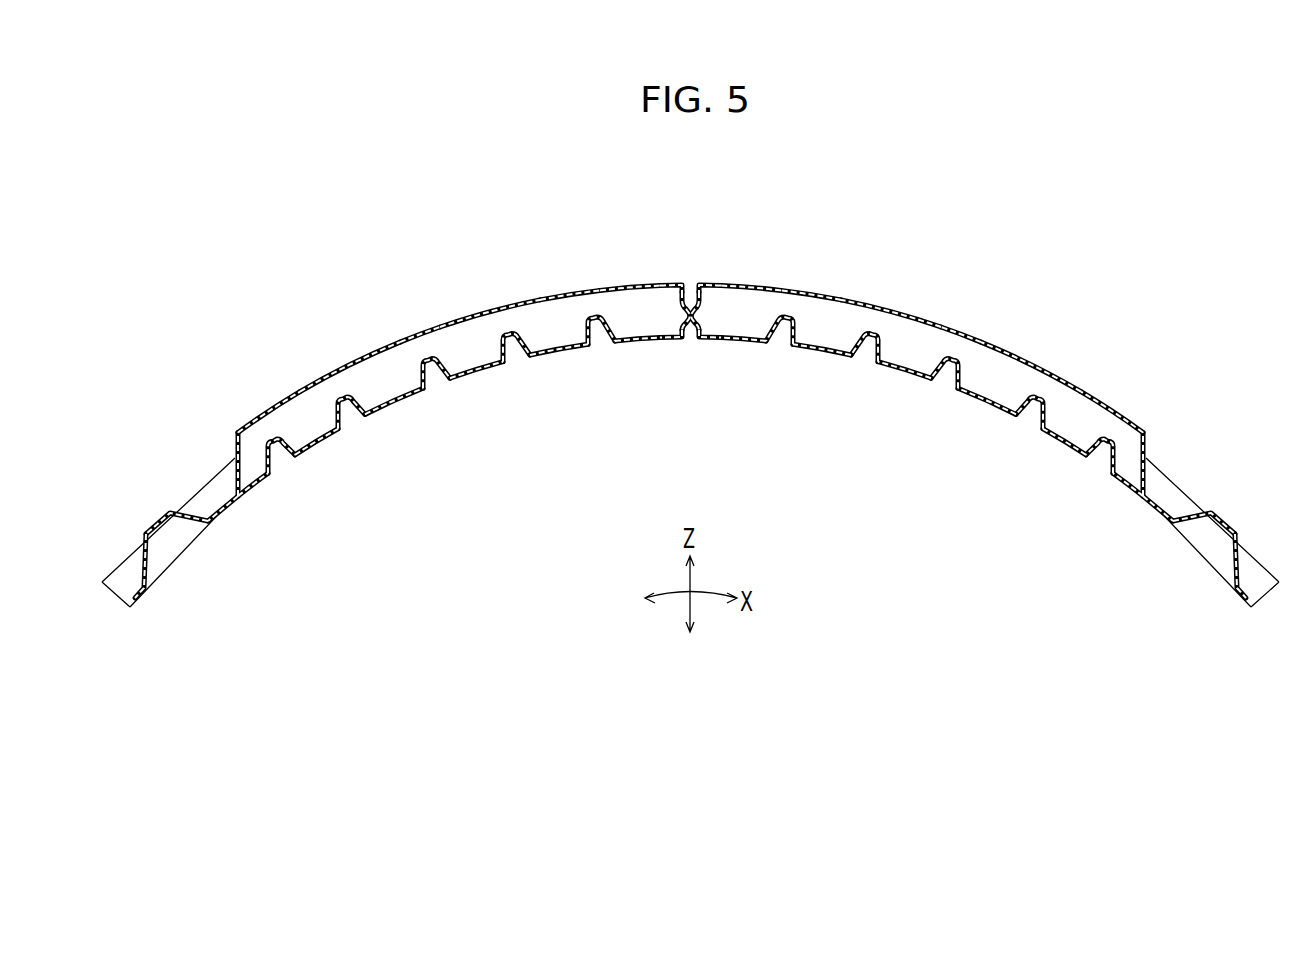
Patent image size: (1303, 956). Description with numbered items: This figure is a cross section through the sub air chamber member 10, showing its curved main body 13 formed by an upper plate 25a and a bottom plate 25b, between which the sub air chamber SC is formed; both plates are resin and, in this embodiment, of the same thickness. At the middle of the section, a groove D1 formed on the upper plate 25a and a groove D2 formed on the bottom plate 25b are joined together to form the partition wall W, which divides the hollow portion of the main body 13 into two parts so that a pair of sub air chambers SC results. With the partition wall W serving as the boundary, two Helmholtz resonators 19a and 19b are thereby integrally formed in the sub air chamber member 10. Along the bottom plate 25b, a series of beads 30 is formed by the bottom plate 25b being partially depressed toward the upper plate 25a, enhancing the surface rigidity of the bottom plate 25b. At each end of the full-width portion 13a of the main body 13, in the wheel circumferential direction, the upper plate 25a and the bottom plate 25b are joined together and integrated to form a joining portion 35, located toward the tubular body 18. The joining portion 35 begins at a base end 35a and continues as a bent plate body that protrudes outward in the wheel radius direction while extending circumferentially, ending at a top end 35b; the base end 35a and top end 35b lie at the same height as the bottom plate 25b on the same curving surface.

The sub air chamber member 10 is at (692, 404).
The main body 13 is at (345, 360).
The full-width portion 13a is at (690, 334).
The tubular body 18 is at (130, 553).
The Helmholtz resonator 19a is at (450, 318).
The Helmholtz resonator 19b is at (931, 318).
The upper plate 25a is at (280, 394).
The bottom plate 25b is at (312, 447).
The bead 30 is at (434, 386).
The joining portion 35 is at (155, 510).
The base end 35a is at (235, 500).
The top end 35b is at (144, 597).
The sub air chamber SC is at (560, 312).
The partition wall W is at (682, 305).
The groove D1 is at (690, 298).
The groove D2 is at (692, 345).